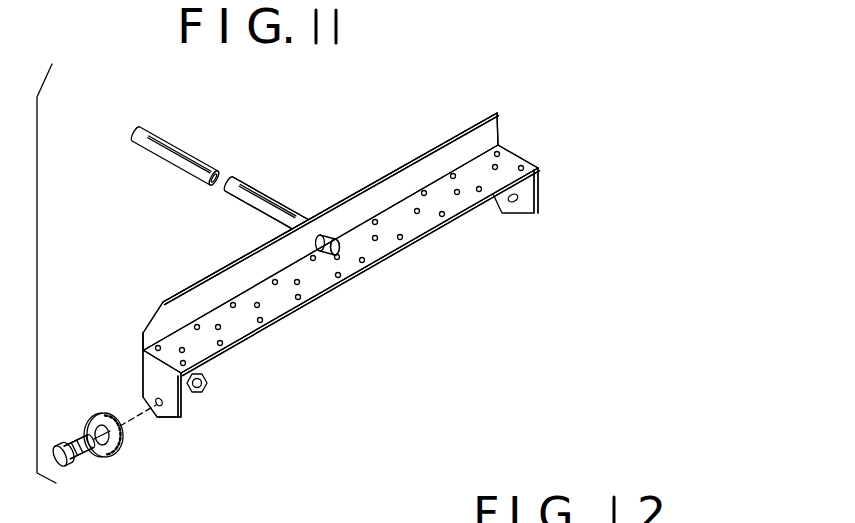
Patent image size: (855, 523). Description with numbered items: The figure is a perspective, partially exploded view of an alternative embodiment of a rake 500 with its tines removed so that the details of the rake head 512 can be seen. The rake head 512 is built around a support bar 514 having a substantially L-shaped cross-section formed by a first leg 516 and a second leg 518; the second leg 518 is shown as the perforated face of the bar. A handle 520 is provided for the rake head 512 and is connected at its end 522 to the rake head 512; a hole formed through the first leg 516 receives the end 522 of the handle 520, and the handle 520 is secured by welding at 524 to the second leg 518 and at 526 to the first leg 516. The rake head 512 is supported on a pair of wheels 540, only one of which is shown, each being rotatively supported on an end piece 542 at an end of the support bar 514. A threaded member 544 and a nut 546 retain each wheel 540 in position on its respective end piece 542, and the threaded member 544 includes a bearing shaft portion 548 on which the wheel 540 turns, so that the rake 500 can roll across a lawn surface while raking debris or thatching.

The rake 500 is at (322, 130).
The rake head 512 is at (541, 146).
The support bar 514 is at (517, 121).
The first leg 516 is at (467, 127).
The second leg 518 is at (490, 178).
The handle 520 is at (160, 132).
The end of handle 522 is at (333, 240).
The weld to second leg 524 is at (340, 255).
The weld to first leg 526 is at (292, 226).
The wheel 540 is at (105, 360).
The end piece 542 is at (181, 398).
The threaded member 544 is at (66, 466).
The nut 546 is at (208, 381).
The bearing shaft portion 548 is at (84, 462).